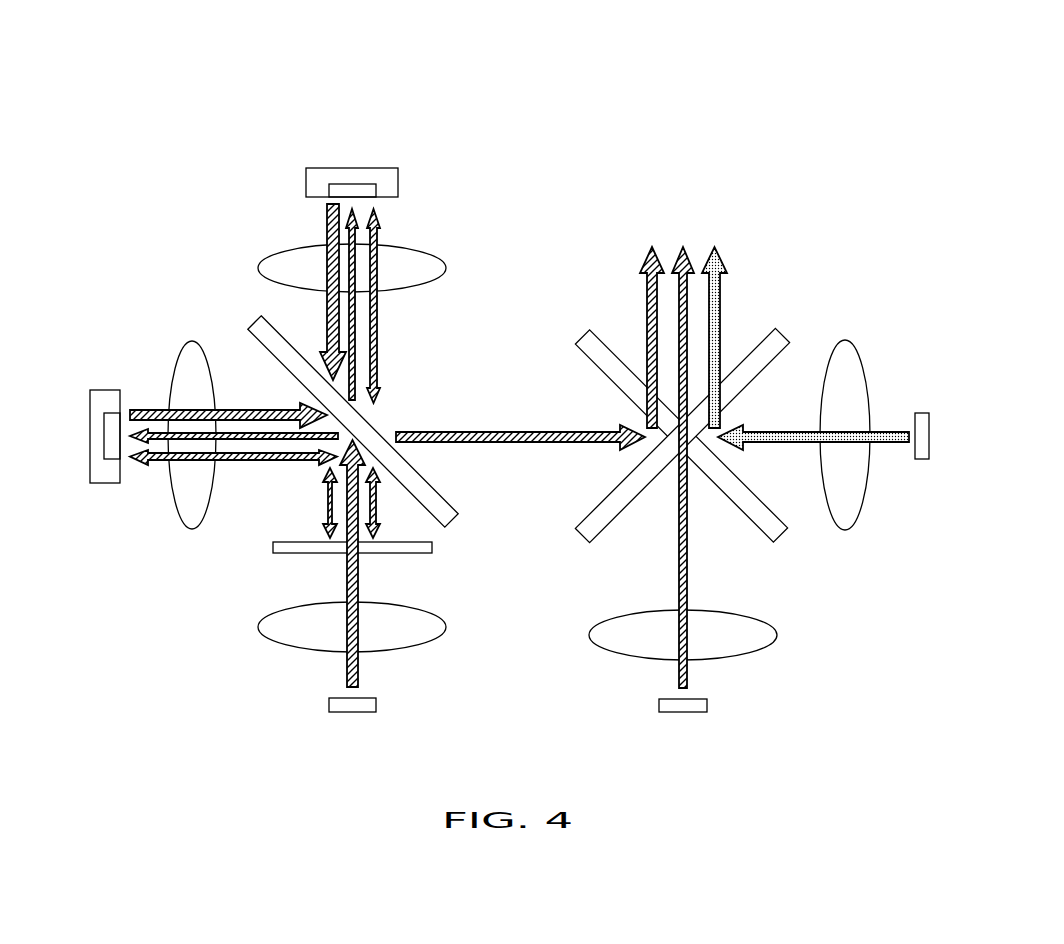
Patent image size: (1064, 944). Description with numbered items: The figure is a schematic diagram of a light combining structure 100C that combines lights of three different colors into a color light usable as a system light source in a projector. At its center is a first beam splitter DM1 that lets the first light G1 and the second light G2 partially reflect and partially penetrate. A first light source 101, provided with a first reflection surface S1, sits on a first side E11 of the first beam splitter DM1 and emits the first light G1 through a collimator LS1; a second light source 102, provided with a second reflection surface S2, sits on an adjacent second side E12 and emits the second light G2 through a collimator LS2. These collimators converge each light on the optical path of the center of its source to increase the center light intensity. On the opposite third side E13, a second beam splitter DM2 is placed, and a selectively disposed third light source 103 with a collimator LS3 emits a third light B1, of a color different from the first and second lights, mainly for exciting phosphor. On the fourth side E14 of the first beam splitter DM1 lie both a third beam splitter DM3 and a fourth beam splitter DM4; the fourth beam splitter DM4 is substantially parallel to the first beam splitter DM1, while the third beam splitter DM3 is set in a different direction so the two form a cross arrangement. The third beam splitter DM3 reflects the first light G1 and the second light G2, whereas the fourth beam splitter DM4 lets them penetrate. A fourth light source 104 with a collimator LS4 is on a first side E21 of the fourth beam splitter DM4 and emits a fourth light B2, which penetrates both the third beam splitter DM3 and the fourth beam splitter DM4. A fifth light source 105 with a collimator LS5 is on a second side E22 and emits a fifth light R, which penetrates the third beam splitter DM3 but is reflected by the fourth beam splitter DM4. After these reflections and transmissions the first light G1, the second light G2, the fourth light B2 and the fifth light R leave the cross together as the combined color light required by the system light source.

The light combining structure 100C is at (1052, 91).
The first light source 101 is at (338, 183).
The second light source 102 is at (104, 445).
The third light source 103 is at (352, 712).
The fourth light source 104 is at (683, 712).
The fifth light source 105 is at (922, 413).
The first reflection surface S1 is at (373, 168).
The second reflection surface S2 is at (90, 413).
The first side E11 is at (483, 195).
The second side E12 is at (121, 373).
The third side E13 is at (281, 712).
The fourth side E14 is at (604, 415).
The first side E21 is at (806, 712).
The second side E22 is at (994, 452).
The collimator LS1 is at (420, 250).
The collimator LS2 is at (192, 340).
The collimator LS3 is at (418, 648).
The collimator LS4 is at (748, 655).
The collimator LS5 is at (845, 340).
The first beam splitter DM1 is at (437, 490).
The second beam splitter DM2 is at (405, 553).
The third beam splitter DM3 is at (592, 515).
The fourth beam splitter DM4 is at (785, 535).
The first light G1 is at (327, 318).
The second light G2 is at (240, 410).
The third light B1 is at (347, 577).
The fourth light B2 is at (687, 290).
The fifth light R is at (720, 318).